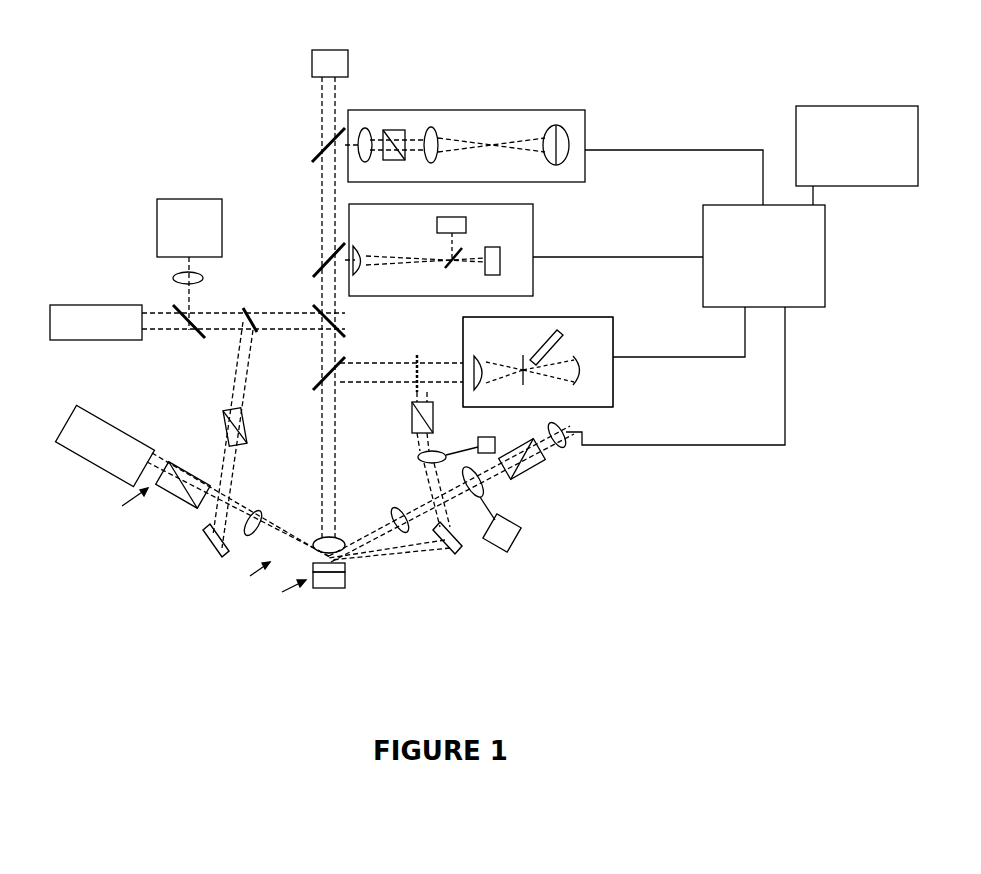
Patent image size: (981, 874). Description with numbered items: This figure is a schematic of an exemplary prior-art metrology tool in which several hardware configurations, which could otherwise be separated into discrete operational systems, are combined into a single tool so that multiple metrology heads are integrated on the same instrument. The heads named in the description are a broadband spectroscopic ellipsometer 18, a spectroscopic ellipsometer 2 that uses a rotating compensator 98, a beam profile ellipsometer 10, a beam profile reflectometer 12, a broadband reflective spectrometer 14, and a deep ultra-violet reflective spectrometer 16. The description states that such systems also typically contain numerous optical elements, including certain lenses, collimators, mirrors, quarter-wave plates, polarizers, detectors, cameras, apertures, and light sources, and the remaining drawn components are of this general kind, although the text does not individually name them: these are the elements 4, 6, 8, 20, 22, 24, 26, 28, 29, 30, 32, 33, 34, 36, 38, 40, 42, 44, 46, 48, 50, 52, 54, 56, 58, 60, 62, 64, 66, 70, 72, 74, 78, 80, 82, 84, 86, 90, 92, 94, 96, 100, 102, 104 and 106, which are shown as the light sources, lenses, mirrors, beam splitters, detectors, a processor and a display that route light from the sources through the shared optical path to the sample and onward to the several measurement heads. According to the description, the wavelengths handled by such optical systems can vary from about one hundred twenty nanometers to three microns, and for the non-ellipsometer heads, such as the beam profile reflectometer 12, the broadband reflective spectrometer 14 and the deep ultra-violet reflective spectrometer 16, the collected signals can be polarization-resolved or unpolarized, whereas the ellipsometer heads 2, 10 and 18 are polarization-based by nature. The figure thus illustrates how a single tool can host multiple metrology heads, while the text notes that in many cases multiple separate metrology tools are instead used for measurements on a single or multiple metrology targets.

The spectroscopic ellipsometer 2 is at (130, 501).
The objective direction arrow 4 is at (288, 590).
The stage 6 is at (345, 582).
The sample 8 is at (345, 566).
The beam profile ellipsometer 10 is at (474, 108).
The beam profile reflectometer 12 is at (535, 220).
The broadband reflective spectrometer 14 is at (553, 317).
The deep ultra-violet reflective spectrometer 16 is at (538, 362).
The broadband spectroscopic ellipsometer 18 is at (249, 572).
The laser 20 is at (75, 341).
The light source 22 is at (188, 199).
The beam splitter mirror 24 is at (180, 338).
The illumination beam 26 is at (340, 440).
The lens 28 is at (203, 275).
The mirror 29 is at (196, 340).
The mirror 30 is at (350, 325).
The objective lens 32 is at (340, 537).
The objective 33 is at (329, 545).
The lens 34 is at (363, 128).
The beam splitter cube 36 is at (395, 128).
The lens 38 is at (437, 128).
The lens 40 is at (565, 128).
The mirror 42 is at (312, 384).
The mirror 44 is at (310, 270).
The mirror 46 is at (310, 150).
The processor 48 is at (695, 315).
The lens 50 is at (366, 252).
The beam splitter 52 is at (456, 266).
The detector 54 is at (500, 258).
The detector 56 is at (466, 225).
The detection unit housing 58 is at (615, 325).
The lens 60 is at (485, 355).
The focal point / slit 62 is at (526, 375).
The lens 64 is at (580, 380).
The mirror 66 is at (564, 342).
The prism 70 is at (248, 418).
The mirror 72 is at (205, 545).
The mirror 74 is at (458, 548).
The lens / detector 78 is at (418, 455).
The prism 80 is at (435, 415).
The mirror 82 is at (252, 310).
The beam splitter 84 is at (414, 357).
The light source 86 is at (348, 58).
The light source 90 is at (60, 448).
The prism 92 is at (180, 500).
The lens 94 is at (262, 515).
The lens 96 is at (402, 507).
The rotating compensator 98 is at (483, 490).
The detector 100 is at (520, 522).
The prism 102 is at (538, 455).
The display / lens 104 is at (568, 445).
The illumination beam 106 is at (160, 458).